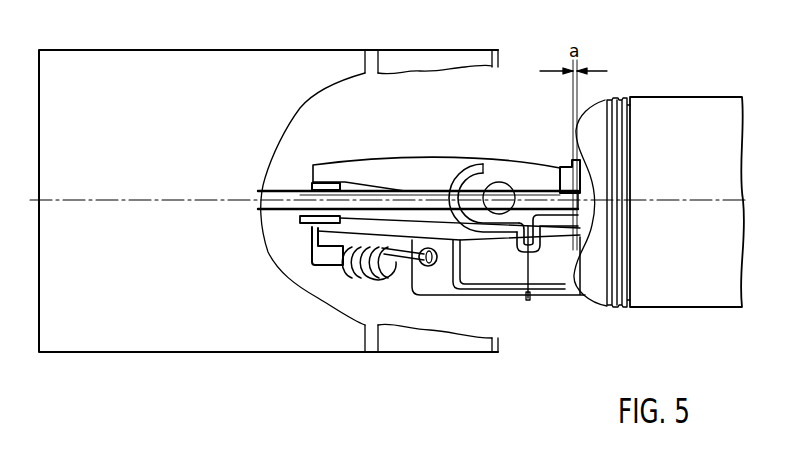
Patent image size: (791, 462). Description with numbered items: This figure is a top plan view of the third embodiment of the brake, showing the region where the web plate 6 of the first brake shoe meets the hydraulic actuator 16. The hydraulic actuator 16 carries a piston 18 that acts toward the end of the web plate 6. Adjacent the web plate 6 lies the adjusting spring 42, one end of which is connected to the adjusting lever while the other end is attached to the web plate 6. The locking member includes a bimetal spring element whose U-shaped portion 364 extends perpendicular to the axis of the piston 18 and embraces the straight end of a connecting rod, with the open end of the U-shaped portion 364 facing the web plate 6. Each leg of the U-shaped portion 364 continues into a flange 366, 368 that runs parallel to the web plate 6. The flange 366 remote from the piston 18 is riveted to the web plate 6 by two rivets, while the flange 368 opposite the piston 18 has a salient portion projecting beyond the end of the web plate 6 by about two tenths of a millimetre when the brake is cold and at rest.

The web plate 6 is at (366, 197).
The hydraulic actuator 16 is at (695, 275).
The piston 18 is at (577, 166).
The adjusting spring 42 is at (380, 268).
The U-shaped portion 364 is at (533, 252).
The flange 366 is at (498, 222).
The flange 368 is at (573, 215).